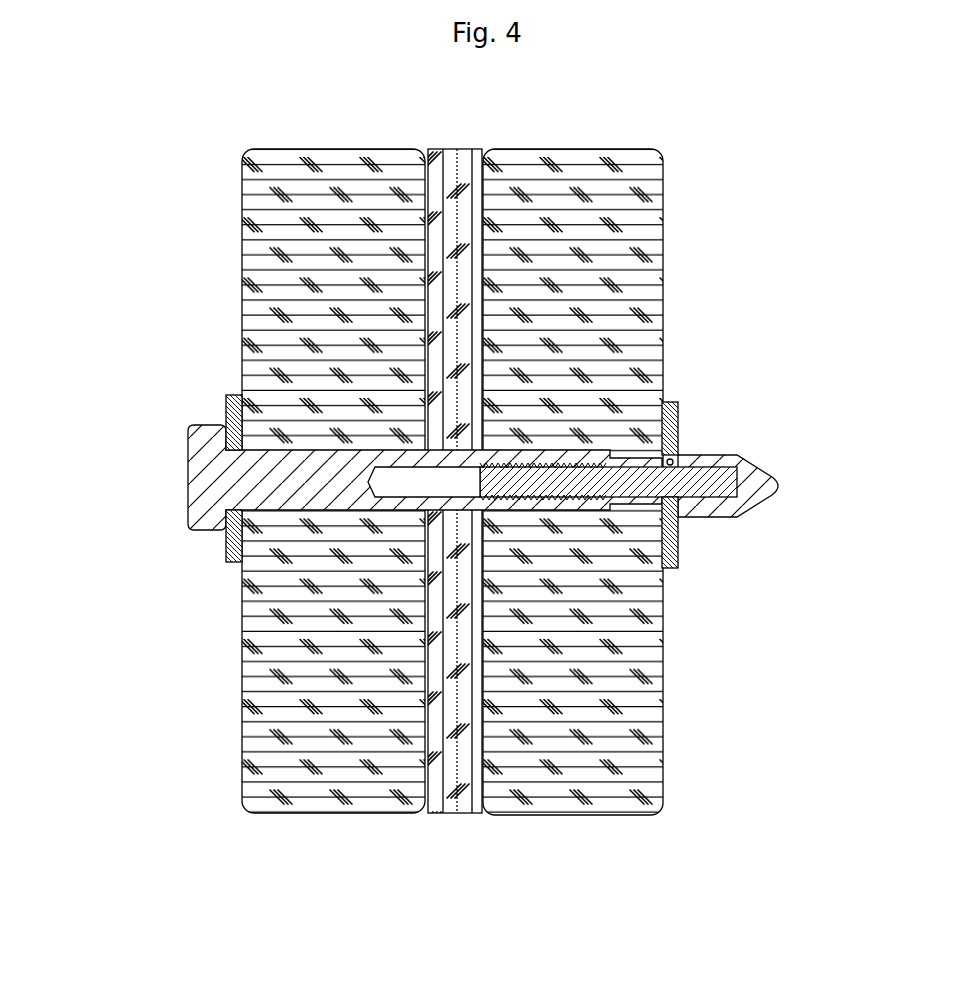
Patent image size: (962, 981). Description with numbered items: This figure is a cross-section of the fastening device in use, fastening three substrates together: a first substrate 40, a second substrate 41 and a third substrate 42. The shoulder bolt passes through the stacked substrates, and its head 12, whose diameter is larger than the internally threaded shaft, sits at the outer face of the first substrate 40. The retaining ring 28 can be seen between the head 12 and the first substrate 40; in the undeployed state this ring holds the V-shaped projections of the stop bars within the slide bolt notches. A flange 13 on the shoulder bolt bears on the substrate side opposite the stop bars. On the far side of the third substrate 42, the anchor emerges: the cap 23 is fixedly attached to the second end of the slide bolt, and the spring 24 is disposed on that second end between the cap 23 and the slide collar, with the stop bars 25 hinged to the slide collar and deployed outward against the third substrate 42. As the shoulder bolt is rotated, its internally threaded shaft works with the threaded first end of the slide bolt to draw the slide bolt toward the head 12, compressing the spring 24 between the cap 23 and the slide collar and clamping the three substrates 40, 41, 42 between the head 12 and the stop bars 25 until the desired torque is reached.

The head 12 is at (187, 480).
The flange 13 is at (230, 408).
The retaining ring 28 is at (237, 562).
The stop bars 25 is at (680, 417).
The spring 24 is at (707, 517).
The cap 23 is at (760, 466).
The first substrate 40 is at (330, 813).
The second substrate 41 is at (450, 813).
The third substrate 42 is at (555, 816).